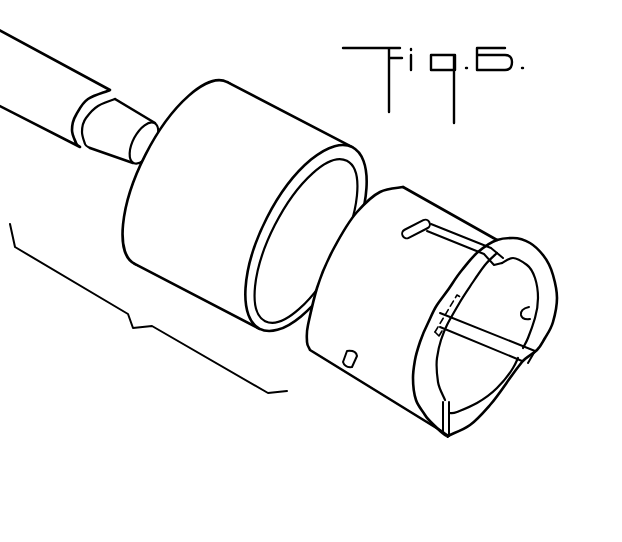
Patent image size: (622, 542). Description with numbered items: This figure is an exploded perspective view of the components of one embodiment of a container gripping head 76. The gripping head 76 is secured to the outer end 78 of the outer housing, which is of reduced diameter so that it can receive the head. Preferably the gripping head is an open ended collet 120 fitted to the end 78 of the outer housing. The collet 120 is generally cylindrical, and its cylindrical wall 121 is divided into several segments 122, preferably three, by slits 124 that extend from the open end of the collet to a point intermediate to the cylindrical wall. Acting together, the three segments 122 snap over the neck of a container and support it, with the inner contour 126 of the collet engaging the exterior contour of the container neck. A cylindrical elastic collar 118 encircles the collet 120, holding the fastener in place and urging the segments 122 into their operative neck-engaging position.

The container gripping head 76 is at (143, 209).
The outer end of the outer housing 78 is at (125, 118).
The cylindrical elastic collar 118 is at (310, 130).
The collet 120 is at (473, 228).
The cylindrical wall 121 is at (322, 341).
The segments 122 is at (545, 289).
The slits 124 is at (500, 242).
The inner contour of the collet 126 is at (524, 317).